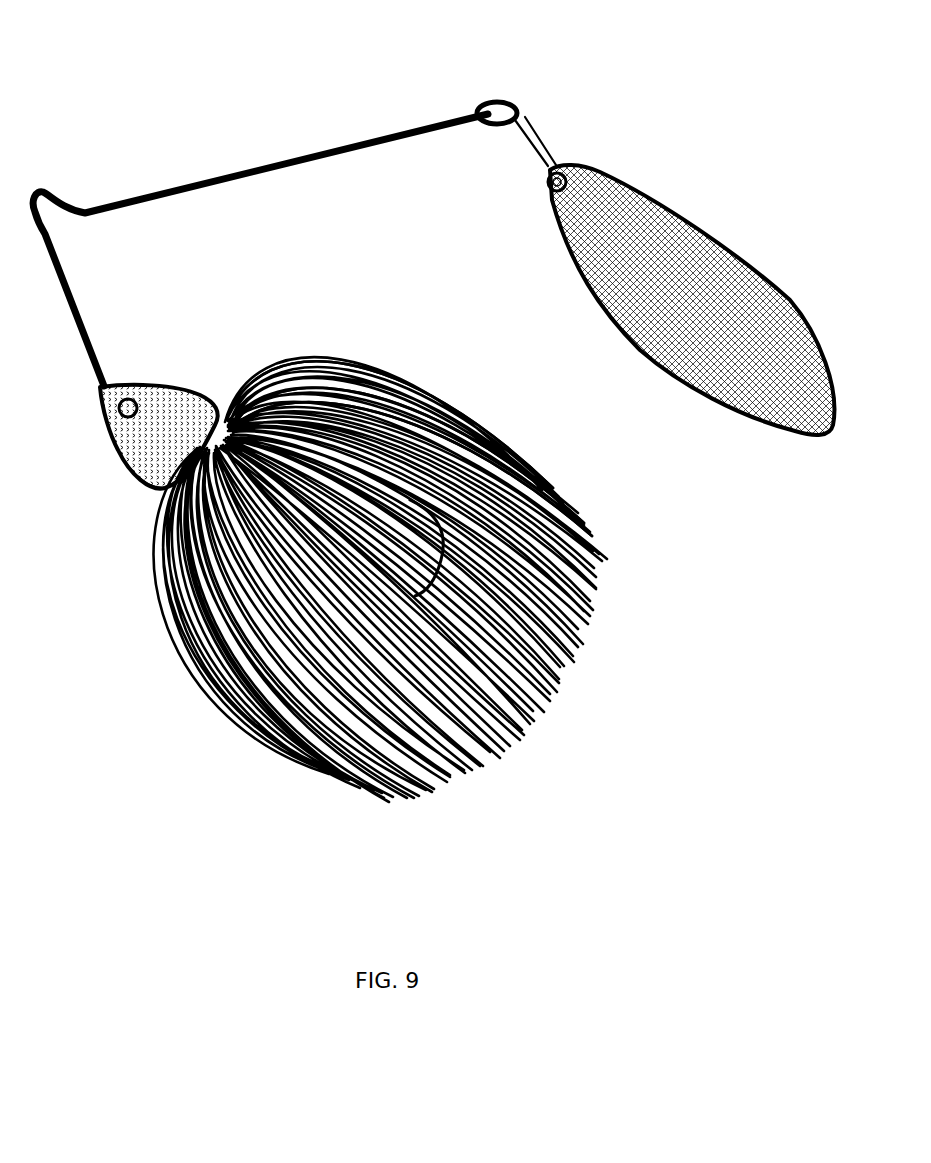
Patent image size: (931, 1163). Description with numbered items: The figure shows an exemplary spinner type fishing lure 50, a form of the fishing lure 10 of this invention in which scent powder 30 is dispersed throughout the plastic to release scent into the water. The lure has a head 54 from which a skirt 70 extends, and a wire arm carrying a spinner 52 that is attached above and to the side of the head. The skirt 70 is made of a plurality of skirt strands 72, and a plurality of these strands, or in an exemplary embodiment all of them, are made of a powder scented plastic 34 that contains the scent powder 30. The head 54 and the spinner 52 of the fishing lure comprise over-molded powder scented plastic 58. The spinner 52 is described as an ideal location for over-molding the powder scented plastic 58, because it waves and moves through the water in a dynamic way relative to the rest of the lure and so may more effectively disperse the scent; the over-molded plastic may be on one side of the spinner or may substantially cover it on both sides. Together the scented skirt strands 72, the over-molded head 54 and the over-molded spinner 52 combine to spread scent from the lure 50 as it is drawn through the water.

The fishing lure 10 is at (222, 98).
The scent powder 30 is at (455, 770).
The powder scented plastic 34 is at (399, 386).
The spinner type fishing lure 50 is at (158, 405).
The spinner 52 is at (643, 223).
The head 54 is at (133, 452).
The over-molded powder scented plastic 58 is at (693, 257).
The skirt 70 is at (493, 447).
The skirt strands 72 is at (336, 372).